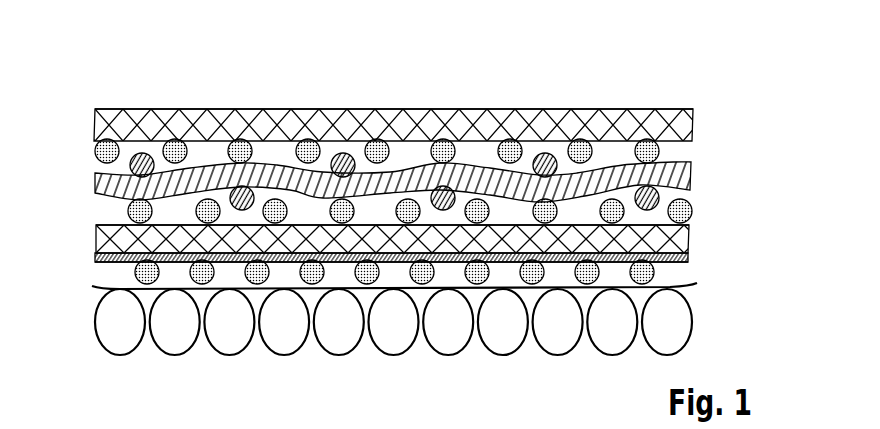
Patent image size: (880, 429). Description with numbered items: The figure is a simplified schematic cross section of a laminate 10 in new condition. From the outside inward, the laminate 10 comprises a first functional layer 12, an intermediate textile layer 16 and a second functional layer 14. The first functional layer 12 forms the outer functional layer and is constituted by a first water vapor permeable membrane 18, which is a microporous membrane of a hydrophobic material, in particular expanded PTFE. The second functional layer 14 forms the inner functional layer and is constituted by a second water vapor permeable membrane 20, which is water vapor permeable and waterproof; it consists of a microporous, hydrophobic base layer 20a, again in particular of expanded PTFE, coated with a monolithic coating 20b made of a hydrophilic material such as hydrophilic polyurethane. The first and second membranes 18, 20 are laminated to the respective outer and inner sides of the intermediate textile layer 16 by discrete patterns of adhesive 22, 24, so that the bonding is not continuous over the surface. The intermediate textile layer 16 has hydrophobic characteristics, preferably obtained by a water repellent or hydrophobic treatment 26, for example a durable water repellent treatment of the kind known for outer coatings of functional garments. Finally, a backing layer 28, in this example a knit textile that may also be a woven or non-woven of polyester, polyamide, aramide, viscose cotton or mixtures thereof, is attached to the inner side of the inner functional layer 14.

The laminate 10 is at (703, 82).
The first functional layer 12 is at (690, 118).
The second functional layer 14 is at (684, 238).
The intermediate textile layer 16 is at (678, 164).
The first water vapor permeable membrane 18 is at (612, 108).
The second water vapor permeable membrane 20 is at (94, 264).
The base layer 20a is at (108, 213).
The monolithic coating 20b is at (680, 262).
The discrete pattern of adhesive 22 is at (647, 138).
The discrete pattern of adhesive 24 is at (684, 212).
The water repellent or hydrophobic treatment 26 is at (658, 192).
The backing layer 28 is at (692, 321).